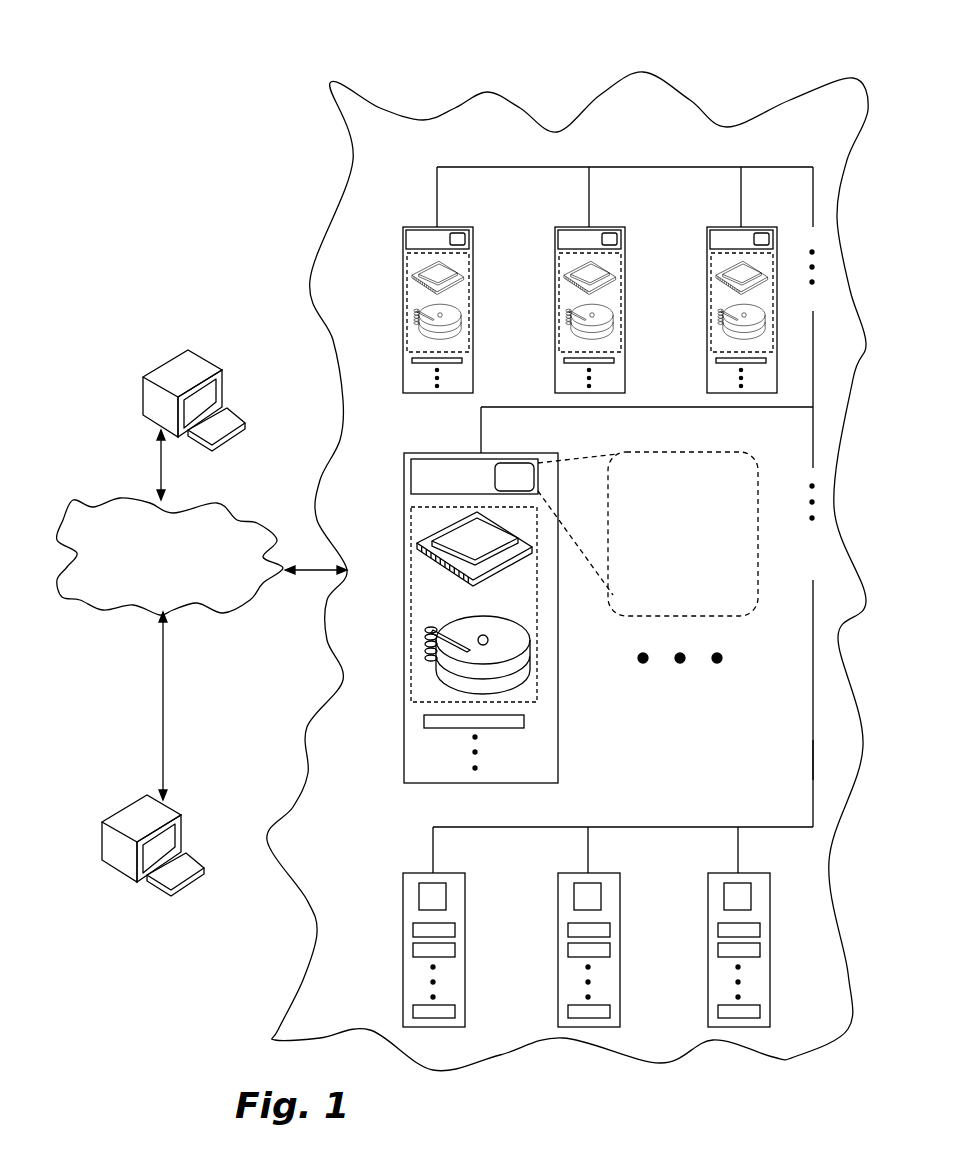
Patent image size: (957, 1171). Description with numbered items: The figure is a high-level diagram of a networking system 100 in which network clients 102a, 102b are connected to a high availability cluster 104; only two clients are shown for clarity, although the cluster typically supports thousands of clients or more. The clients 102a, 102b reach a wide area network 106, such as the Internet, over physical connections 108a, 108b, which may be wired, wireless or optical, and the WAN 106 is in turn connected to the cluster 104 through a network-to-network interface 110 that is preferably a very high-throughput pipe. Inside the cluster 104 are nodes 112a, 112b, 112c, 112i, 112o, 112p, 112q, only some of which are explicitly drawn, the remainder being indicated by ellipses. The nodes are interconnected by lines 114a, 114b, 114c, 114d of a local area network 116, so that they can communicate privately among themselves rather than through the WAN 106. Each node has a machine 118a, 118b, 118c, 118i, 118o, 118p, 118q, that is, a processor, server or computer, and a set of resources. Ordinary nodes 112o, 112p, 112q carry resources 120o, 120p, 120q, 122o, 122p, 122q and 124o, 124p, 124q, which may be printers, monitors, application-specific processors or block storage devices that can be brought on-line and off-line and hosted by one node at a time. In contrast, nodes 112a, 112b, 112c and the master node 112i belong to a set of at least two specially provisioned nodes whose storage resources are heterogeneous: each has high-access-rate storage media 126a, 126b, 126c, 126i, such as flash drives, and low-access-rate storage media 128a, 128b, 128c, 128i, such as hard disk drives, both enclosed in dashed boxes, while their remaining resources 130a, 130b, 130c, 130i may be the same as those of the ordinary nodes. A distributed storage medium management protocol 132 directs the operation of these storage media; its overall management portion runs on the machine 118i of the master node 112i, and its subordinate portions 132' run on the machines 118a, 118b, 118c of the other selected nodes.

The networking system 100 is at (183, 60).
The network client 102a is at (165, 353).
The network client 102b is at (118, 878).
The high availability cluster 104 is at (487, 92).
The wide area network (WAN) 106 is at (152, 564).
The physical connection 108a is at (161, 470).
The physical connection 108b is at (163, 705).
The network-to-network interface 110 is at (332, 567).
The node 112a is at (726, 227).
The node 112b is at (574, 227).
The node 112c is at (422, 227).
The master node 112i is at (438, 453).
The node 112o is at (723, 873).
The node 112p is at (573, 873).
The node 112q is at (418, 873).
The LAN line 114a is at (495, 145).
The LAN line 114b is at (660, 392).
The LAN line 114c is at (613, 827).
The LAN line 114d is at (813, 758).
The local area network (LAN) 116 is at (792, 147).
The machine 118a is at (710, 243).
The machine 118b is at (558, 243).
The machine 118c is at (406, 243).
The machine 118i is at (411, 478).
The machine 118o is at (724, 895).
The machine 118p is at (574, 895).
The machine 118q is at (419, 895).
The resource 120o is at (718, 930).
The resource 120p is at (568, 930).
The resource 120q is at (413, 930).
The resource 122o is at (718, 950).
The resource 122p is at (568, 950).
The resource 122q is at (413, 950).
The resource 124o is at (718, 1012).
The resource 124p is at (568, 1012).
The resource 124q is at (413, 1012).
The high-access-rate storage medium 126a is at (711, 268).
The high-access-rate storage medium 126b is at (559, 268).
The high-access-rate storage medium 126c is at (407, 268).
The high-access-rate storage medium 126i is at (430, 532).
The low-access-rate storage medium 128a is at (716, 333).
The low-access-rate storage medium 128b is at (564, 333).
The low-access-rate storage medium 128c is at (412, 333).
The low-access-rate storage medium 128i is at (430, 678).
The remaining resource 130a is at (716, 361).
The remaining resource 130b is at (564, 361).
The remaining resource 130c is at (412, 361).
The remaining resource 130i is at (423, 718).
The distributed storage medium management protocol 132 is at (626, 516).
The subordinate portion of the distributed storage medium management protocol 132' is at (620, 214).